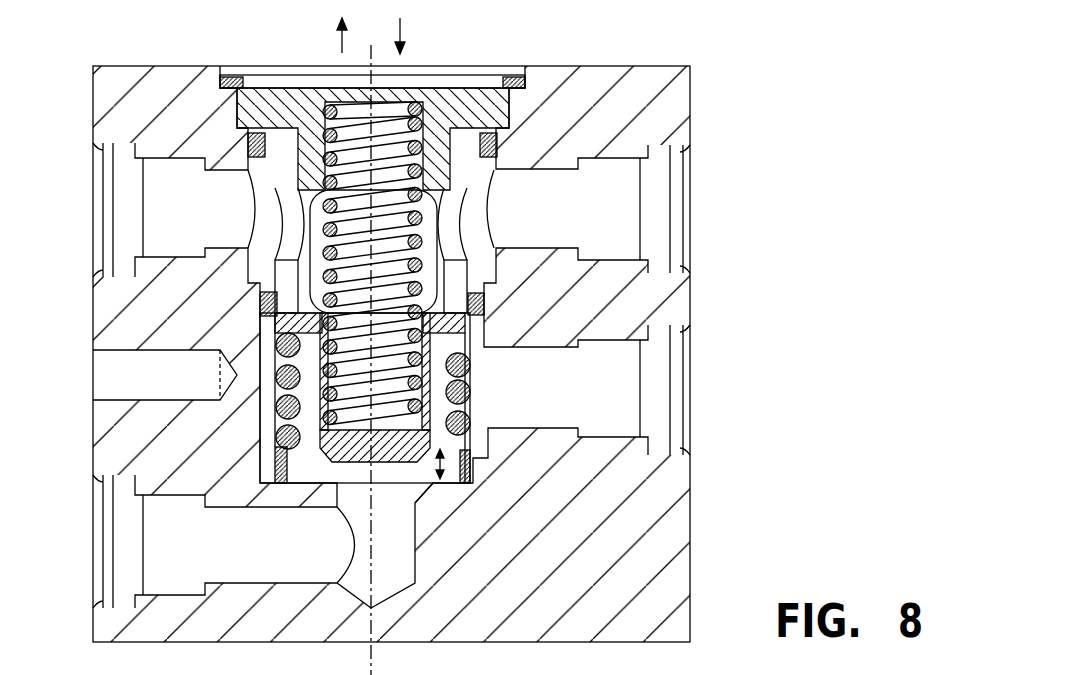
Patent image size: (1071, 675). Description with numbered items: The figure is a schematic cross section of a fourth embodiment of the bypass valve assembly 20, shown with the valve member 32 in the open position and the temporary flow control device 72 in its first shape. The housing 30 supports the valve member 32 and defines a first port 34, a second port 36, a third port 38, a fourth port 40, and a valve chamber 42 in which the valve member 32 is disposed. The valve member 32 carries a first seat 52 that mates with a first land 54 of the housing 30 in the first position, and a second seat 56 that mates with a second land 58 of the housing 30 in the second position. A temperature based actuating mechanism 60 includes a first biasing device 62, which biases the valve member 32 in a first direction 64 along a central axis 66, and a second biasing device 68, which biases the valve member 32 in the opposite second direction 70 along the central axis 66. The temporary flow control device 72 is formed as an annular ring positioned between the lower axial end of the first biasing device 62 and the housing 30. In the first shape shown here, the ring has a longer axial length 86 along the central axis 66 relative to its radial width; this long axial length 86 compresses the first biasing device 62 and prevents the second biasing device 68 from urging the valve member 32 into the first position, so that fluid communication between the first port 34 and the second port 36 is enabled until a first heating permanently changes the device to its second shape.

The bypass valve assembly 20 is at (658, 62).
The housing 30 is at (675, 100).
The valve member 32 is at (470, 413).
The first port 34 is at (667, 325).
The second port 36 is at (108, 610).
The third port 38 is at (100, 150).
The fourth port 40 is at (673, 143).
The valve chamber 42 is at (475, 346).
The first seat 52 is at (287, 468).
The first land 54 is at (335, 500).
The second seat 56 is at (258, 283).
The second land 58 is at (262, 296).
The temperature based actuating mechanism 60 is at (430, 276).
The first biasing device 62 is at (237, 388).
The first direction 64 is at (340, 42).
The central axis 66 is at (370, 632).
The second biasing device 68 is at (425, 150).
The second direction 70 is at (403, 30).
The temporary flow control device 72 is at (447, 453).
The axial length 86 is at (450, 458).